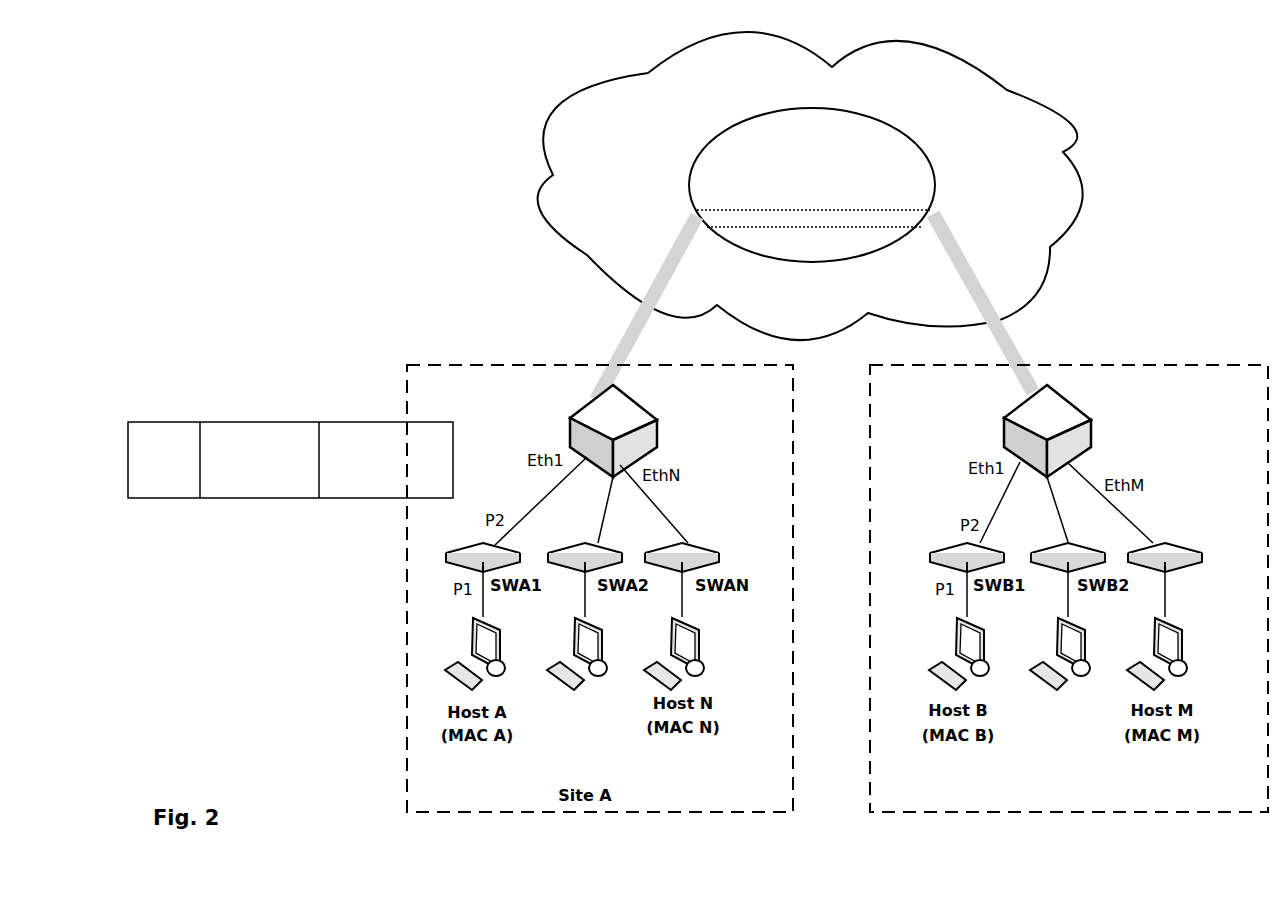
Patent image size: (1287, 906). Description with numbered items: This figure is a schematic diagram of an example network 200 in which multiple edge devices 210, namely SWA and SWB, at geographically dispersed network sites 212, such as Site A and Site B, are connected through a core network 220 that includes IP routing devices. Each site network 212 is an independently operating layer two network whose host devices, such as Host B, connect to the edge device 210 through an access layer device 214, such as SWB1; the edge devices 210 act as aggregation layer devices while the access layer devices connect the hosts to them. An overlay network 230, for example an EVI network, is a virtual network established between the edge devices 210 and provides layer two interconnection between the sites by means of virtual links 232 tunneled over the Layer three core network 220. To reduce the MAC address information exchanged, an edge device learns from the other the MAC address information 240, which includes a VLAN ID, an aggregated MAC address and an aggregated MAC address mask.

The network 200 is at (176, 84).
The edge device 210 is at (584, 417).
The network site 212 is at (1195, 362).
The access layer device 214 is at (1185, 542).
The core network 220 is at (1007, 90).
The overlay network 230 is at (923, 172).
The virtual link 232 is at (808, 211).
The MAC address information 240 is at (310, 403).